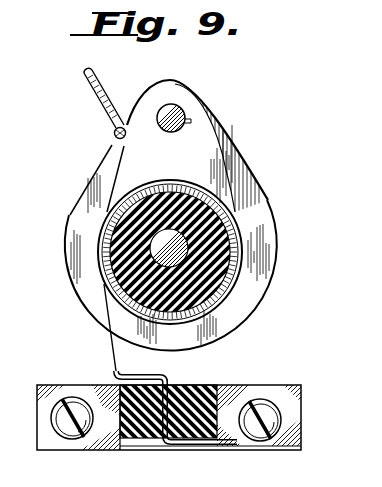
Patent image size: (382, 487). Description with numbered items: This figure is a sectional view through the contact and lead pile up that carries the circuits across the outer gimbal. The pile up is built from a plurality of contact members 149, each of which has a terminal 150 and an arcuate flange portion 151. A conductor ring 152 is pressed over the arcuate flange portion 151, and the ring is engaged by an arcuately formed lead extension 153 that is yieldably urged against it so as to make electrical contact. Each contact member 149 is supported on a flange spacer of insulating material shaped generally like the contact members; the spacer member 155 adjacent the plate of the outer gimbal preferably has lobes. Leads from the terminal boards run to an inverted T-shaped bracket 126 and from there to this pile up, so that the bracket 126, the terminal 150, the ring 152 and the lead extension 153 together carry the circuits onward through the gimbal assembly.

The inverted T-shaped bracket 126 is at (239, 379).
The contact member 149 is at (199, 116).
The terminal 150 is at (106, 129).
The arcuate flange portion 151 is at (176, 183).
The conductor ring 152 is at (221, 204).
The lead extension 153 is at (95, 287).
The spacer member 155 is at (269, 243).